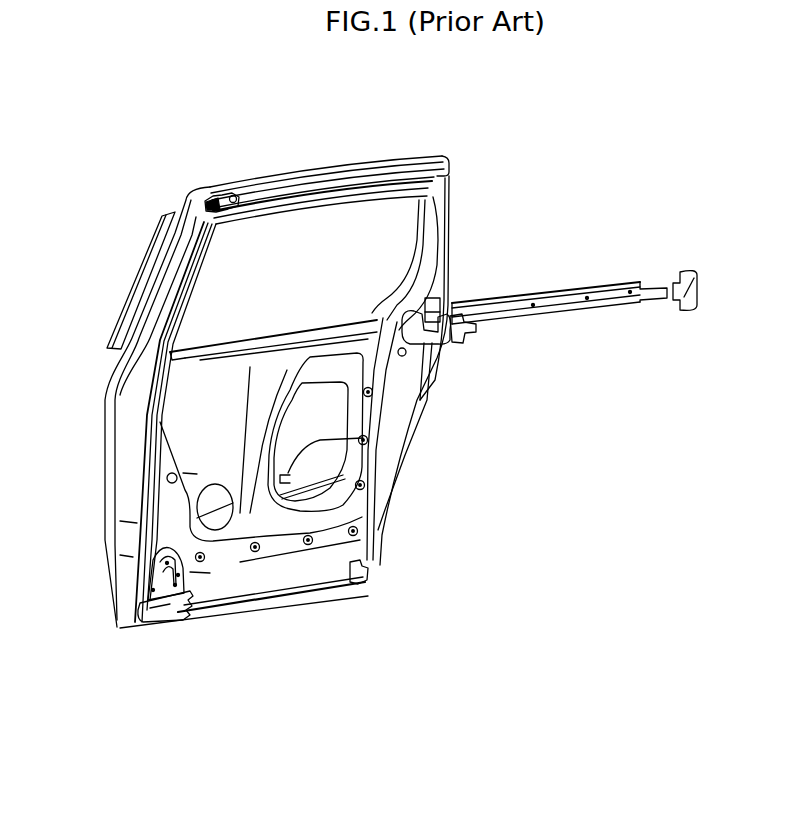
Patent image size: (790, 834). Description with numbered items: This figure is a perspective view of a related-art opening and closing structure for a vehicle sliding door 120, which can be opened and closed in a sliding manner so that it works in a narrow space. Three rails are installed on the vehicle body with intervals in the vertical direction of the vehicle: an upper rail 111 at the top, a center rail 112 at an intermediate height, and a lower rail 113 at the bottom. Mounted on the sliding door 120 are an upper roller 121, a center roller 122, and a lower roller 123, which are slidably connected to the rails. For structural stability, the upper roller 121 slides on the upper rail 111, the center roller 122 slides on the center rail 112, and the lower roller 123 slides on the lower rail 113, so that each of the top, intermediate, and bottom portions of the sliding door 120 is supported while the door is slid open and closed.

The upper rail 111 is at (327, 173).
The center rail 112 is at (483, 300).
The lower rail 113 is at (236, 616).
The sliding door 120 is at (197, 307).
The upper roller 121 is at (217, 185).
The center roller 122 is at (443, 345).
The lower roller 123 is at (153, 612).